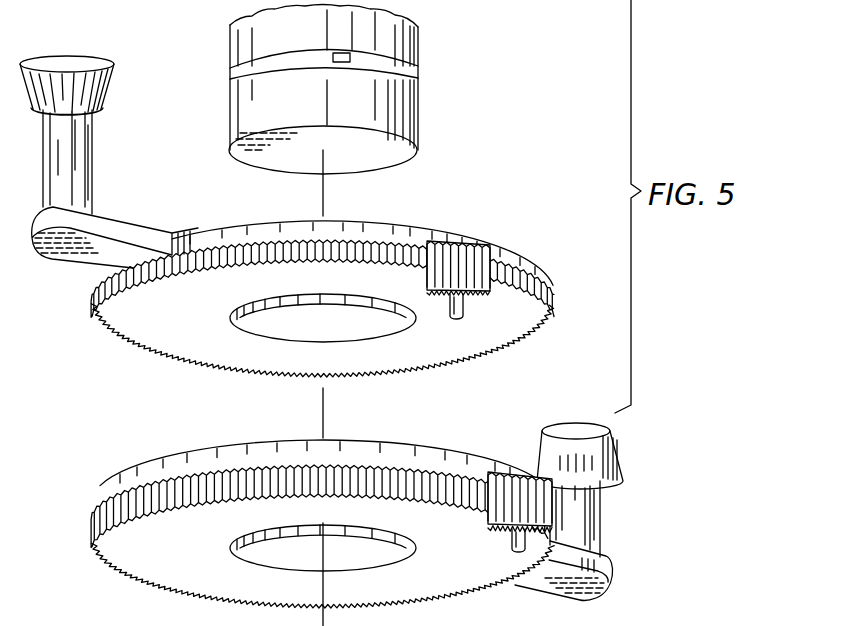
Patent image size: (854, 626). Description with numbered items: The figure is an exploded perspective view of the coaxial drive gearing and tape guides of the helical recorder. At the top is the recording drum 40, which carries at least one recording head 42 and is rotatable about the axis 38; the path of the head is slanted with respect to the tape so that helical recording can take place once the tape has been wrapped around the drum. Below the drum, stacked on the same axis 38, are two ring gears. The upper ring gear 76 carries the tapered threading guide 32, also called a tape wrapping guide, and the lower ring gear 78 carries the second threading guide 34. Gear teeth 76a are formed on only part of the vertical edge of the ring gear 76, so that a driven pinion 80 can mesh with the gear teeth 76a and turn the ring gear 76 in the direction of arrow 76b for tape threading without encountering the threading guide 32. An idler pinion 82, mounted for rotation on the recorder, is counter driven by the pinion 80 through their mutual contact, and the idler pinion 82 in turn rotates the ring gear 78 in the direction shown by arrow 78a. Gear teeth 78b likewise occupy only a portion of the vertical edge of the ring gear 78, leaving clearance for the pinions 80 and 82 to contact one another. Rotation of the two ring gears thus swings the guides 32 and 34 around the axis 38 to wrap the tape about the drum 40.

The threading guide 32 is at (112, 73).
The threading guide 34 is at (583, 423).
The axis 38 is at (326, 402).
The recording drum 40 is at (416, 33).
The recording head 42 is at (337, 53).
The ring gear 76 is at (552, 269).
The gear teeth 76a is at (177, 268).
The arrow 76b is at (383, 200).
The ring gear 78 is at (93, 480).
The arrow 78a is at (473, 444).
The gear teeth 78b is at (175, 503).
The driven pinion 80 is at (478, 287).
The idler pinion 82 is at (512, 476).